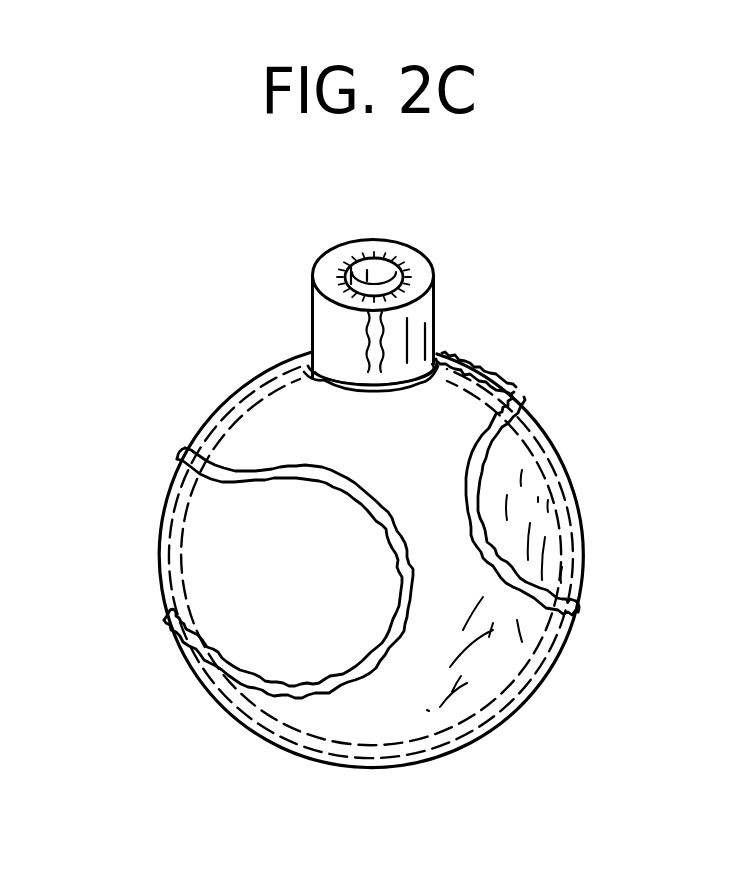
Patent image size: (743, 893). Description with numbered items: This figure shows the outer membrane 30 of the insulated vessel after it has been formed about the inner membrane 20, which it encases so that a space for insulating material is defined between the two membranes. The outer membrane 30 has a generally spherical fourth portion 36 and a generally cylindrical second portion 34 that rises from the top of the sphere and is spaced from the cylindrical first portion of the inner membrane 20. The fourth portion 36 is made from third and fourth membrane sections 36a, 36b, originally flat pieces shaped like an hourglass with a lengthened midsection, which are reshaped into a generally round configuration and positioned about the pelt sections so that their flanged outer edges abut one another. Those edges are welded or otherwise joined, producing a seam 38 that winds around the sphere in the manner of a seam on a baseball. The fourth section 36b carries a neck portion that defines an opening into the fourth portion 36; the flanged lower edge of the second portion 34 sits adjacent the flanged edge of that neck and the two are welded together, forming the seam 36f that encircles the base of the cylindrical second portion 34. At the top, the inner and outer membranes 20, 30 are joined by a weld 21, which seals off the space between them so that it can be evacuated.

The inner membrane 20 is at (388, 277).
The weld 21 is at (388, 248).
The second portion 34 is at (432, 335).
The outer membrane 30 is at (463, 425).
The fourth portion 36 is at (560, 635).
The third membrane section 36a is at (540, 543).
The fourth membrane section 36b is at (452, 683).
The seam 36f is at (450, 371).
The seam 38 is at (465, 513).